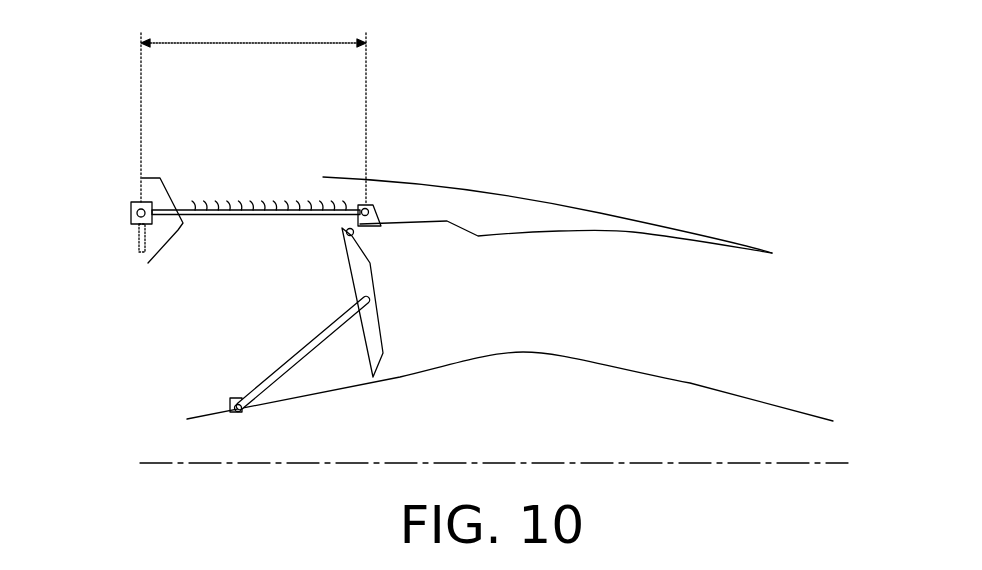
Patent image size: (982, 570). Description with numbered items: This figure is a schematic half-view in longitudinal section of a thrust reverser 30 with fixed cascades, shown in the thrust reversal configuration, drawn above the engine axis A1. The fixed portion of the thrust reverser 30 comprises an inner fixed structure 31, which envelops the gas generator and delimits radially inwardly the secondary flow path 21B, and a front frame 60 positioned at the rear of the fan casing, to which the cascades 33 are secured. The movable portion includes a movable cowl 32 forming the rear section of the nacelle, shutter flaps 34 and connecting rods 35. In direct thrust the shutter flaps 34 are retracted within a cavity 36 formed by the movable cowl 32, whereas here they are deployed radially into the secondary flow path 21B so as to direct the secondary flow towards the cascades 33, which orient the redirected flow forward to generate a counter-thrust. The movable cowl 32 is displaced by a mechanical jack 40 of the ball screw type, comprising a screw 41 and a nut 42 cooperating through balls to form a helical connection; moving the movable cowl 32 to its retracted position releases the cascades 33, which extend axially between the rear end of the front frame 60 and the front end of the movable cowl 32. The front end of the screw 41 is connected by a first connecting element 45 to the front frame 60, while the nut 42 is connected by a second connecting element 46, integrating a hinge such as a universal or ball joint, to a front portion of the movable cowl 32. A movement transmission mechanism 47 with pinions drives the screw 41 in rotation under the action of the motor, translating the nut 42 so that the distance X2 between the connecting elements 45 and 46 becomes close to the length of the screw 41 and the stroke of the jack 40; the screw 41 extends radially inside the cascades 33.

The thrust reverser 30 is at (116, 90).
The inner fixed structure 31 is at (690, 383).
The movable cowl 32 is at (593, 210).
The cascade vanes 33 is at (224, 202).
The shutter flaps 34 is at (380, 319).
The connecting rods 35 is at (298, 357).
The cavity 36 is at (413, 222).
The mechanical jack 40 is at (329, 100).
The screw 41 is at (177, 212).
The nut 42 is at (360, 205).
The first connecting element 45 is at (131, 213).
The second connecting element 46 is at (373, 226).
The movement transmission mechanism 47 is at (132, 203).
The front frame 60 is at (140, 245).
The secondary flow path 21B is at (208, 402).
The axis A1 is at (145, 463).
The distance X2 is at (253, 108).